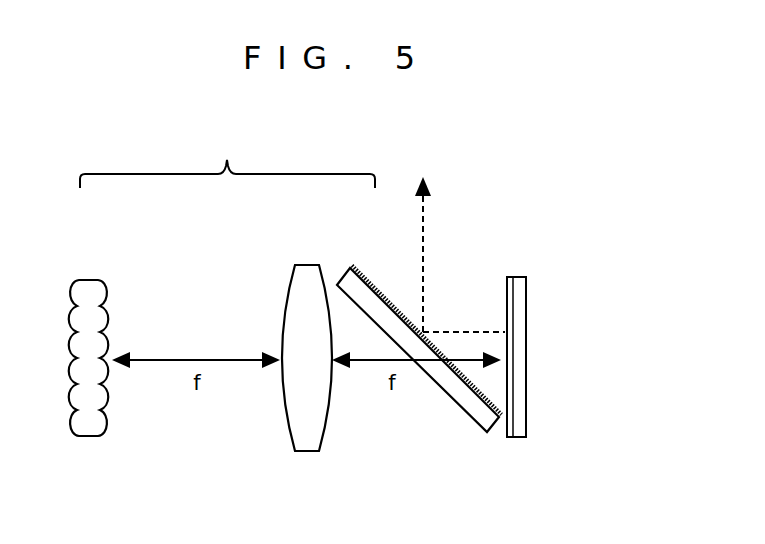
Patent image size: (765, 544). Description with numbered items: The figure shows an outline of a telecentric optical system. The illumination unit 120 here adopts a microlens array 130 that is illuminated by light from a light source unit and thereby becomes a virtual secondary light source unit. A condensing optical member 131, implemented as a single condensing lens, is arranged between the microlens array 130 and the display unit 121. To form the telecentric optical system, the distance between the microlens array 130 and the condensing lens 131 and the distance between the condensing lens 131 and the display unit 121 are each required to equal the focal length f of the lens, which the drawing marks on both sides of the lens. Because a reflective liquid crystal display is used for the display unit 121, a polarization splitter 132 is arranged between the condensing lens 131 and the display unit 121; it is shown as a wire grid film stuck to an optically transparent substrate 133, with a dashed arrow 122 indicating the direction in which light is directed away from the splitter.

The illumination unit 120 is at (227, 161).
The display unit 121 is at (520, 280).
The emission direction of light 122 is at (456, 238).
The microlens array 130 is at (91, 284).
The condensing optical member 131 is at (303, 270).
The polarization splitter 132 is at (365, 288).
The optically transparent substrate 133 is at (463, 417).